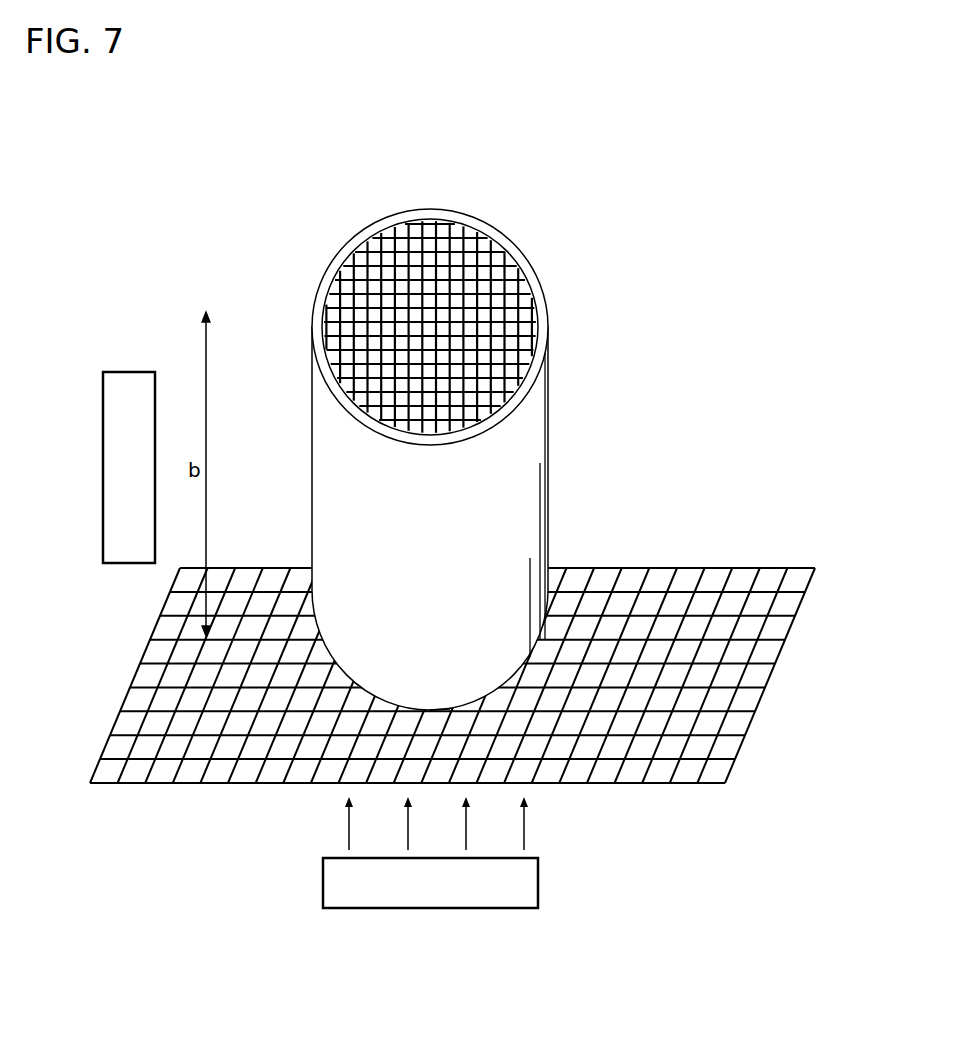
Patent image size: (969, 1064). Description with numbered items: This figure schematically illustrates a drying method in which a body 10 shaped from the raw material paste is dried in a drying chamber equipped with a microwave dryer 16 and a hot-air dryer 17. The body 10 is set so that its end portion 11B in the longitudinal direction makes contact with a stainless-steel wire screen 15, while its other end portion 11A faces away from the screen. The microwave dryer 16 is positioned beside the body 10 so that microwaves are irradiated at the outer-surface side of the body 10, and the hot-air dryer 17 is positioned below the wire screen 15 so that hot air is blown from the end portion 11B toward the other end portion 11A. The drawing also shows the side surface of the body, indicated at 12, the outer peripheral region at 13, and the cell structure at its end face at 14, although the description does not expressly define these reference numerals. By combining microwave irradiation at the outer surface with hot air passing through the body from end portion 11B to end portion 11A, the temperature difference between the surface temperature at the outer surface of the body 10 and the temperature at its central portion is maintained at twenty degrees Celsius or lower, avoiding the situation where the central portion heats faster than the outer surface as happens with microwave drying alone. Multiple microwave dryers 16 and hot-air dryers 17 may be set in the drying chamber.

The body 10 is at (478, 508).
The another end portion 11A is at (522, 253).
The end portion 11B is at (452, 712).
The outer peripheral side surface 12 is at (355, 540).
The outer peripheral wall 13 is at (331, 276).
The cells 14 is at (378, 232).
The stainless-steel wire screen 15 is at (785, 672).
The microwave dryer 16 is at (100, 456).
The hot-air dryer 17 is at (540, 874).